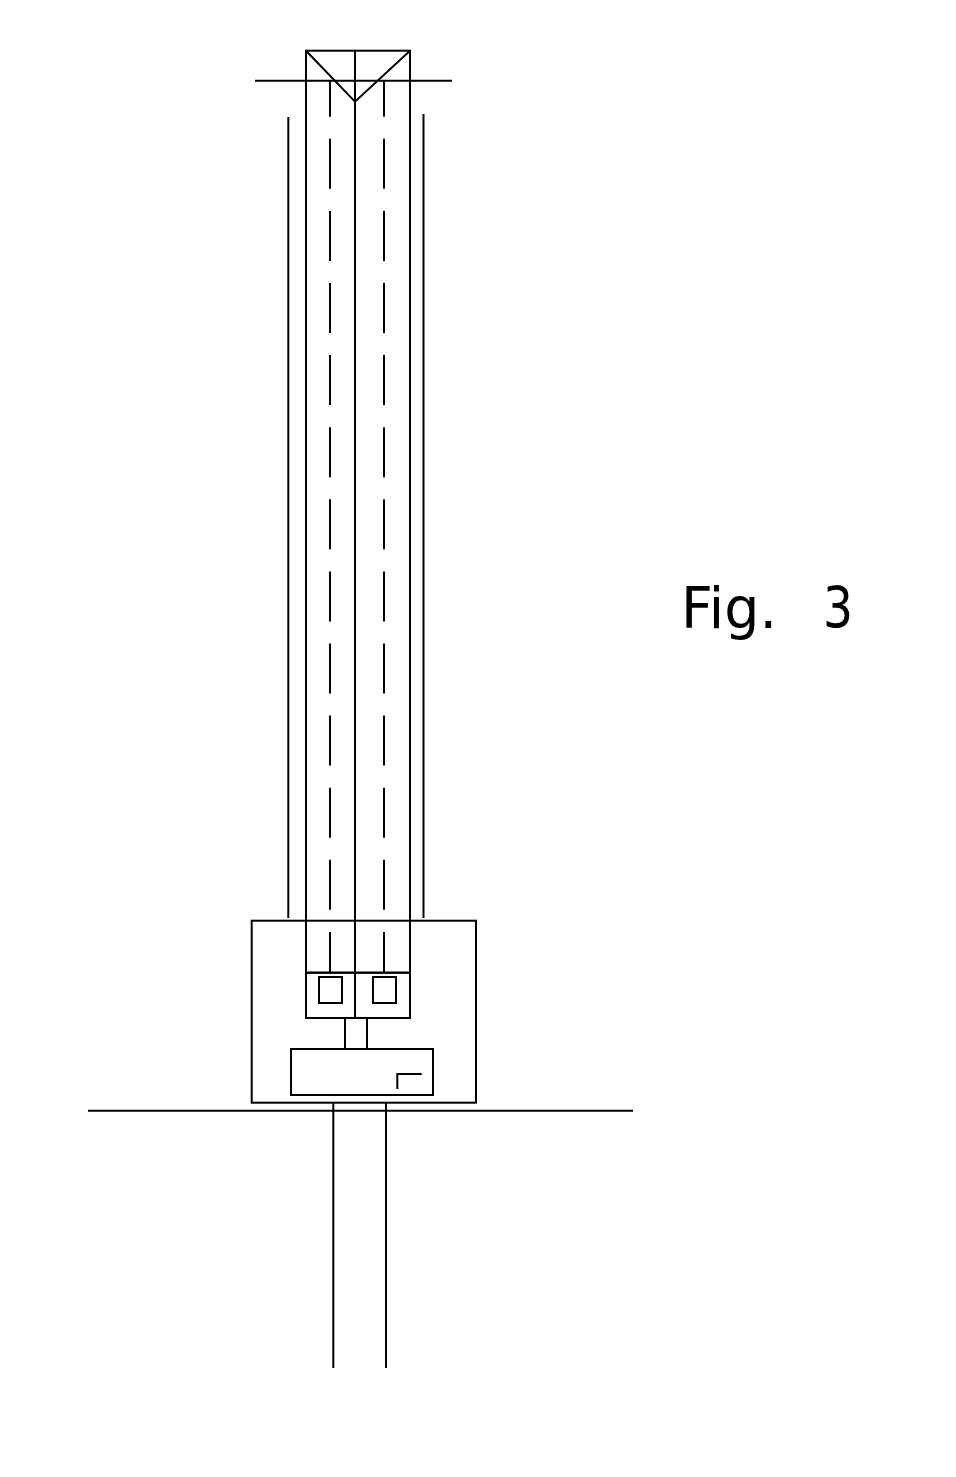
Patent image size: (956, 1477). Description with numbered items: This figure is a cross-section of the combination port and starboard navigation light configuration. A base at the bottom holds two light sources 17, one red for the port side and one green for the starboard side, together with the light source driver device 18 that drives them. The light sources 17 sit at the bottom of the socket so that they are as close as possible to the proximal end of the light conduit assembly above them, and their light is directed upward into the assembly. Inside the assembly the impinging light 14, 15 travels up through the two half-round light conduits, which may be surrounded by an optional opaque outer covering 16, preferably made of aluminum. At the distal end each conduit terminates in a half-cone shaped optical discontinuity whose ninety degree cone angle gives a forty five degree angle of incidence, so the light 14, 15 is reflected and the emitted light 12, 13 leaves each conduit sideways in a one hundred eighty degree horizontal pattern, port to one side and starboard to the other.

The emitted light 12 is at (208, 81).
The emitted light 13 is at (568, 81).
The impinging light 14 is at (318, 376).
The impinging light 15 is at (390, 425).
The opaque outer covering 16 is at (286, 595).
The light source 17 is at (317, 1017).
The light source driver device 18 is at (407, 1082).